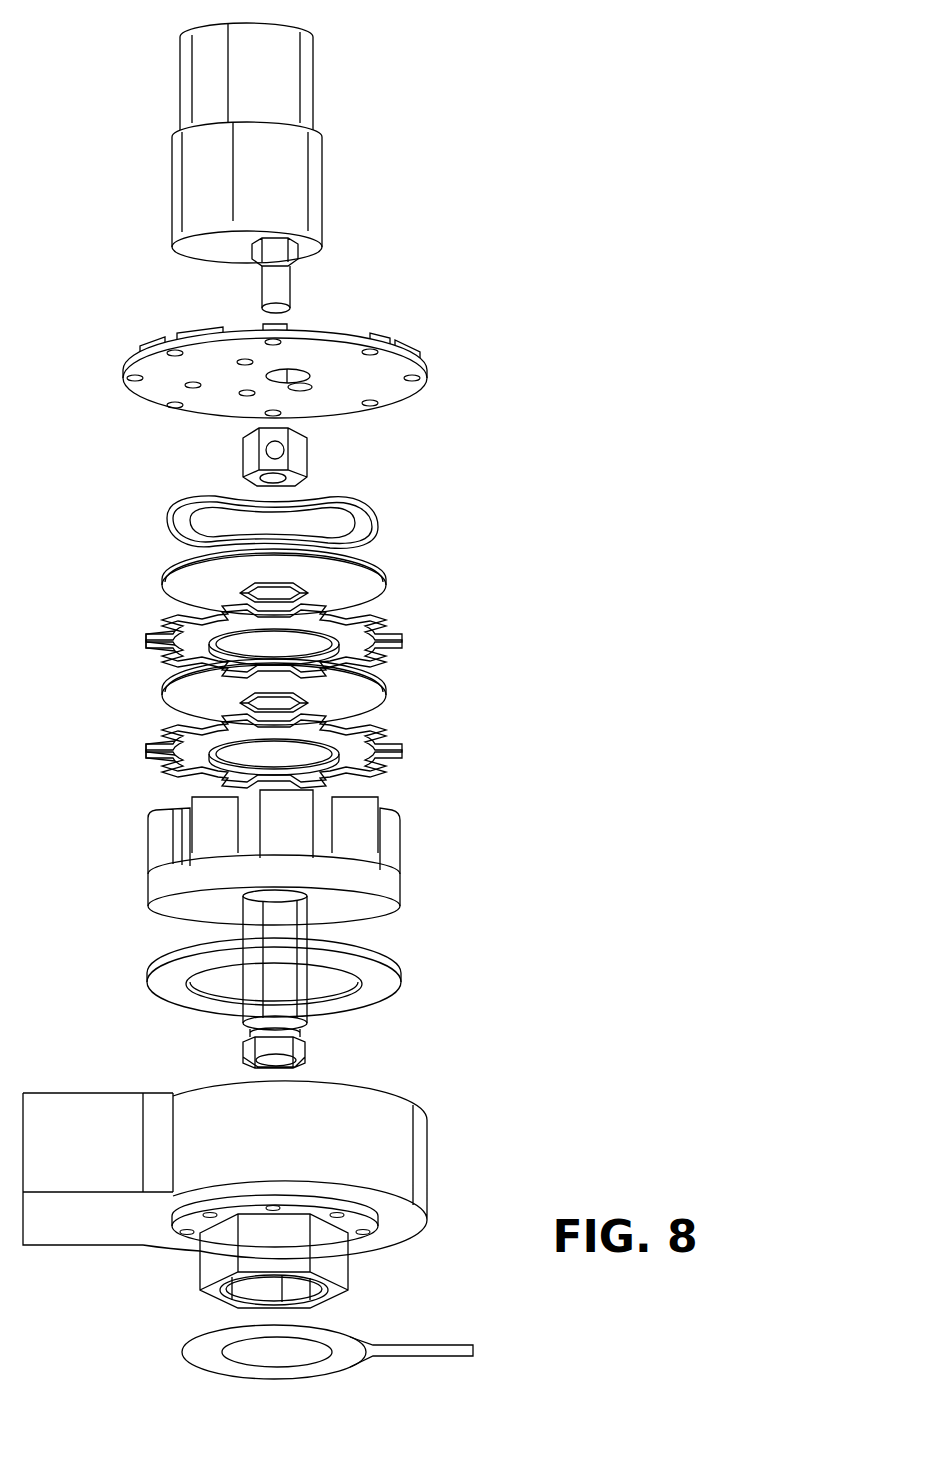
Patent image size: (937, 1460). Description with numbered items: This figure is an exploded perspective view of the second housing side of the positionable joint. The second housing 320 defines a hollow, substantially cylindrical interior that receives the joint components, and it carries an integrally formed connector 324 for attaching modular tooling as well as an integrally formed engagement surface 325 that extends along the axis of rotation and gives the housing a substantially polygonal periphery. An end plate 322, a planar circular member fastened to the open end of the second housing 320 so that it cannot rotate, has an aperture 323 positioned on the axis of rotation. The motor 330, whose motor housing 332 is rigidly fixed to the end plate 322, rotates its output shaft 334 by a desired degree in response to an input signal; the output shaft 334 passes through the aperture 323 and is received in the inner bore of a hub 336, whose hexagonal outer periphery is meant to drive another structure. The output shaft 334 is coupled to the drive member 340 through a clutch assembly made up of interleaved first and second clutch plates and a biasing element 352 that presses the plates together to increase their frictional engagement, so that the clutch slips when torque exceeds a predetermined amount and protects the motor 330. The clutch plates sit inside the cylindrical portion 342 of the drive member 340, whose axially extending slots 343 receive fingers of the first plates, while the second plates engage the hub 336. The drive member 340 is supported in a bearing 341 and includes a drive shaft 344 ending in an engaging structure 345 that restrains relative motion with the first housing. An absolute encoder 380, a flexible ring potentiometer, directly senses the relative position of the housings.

The second housing 320 is at (280, 1160).
The end plate 322 is at (330, 341).
The aperture 323 is at (287, 372).
The connector 324 is at (47, 1093).
The engagement surface 325 is at (340, 1262).
The motor 330 is at (252, 158).
The motor housing 332 is at (200, 182).
The output shaft 334 is at (272, 286).
The hub 336 is at (247, 460).
The drive member 340 is at (275, 929).
The bearing 341 is at (393, 965).
The cylindrical portion 342 is at (148, 858).
The axially extending slots 343 is at (177, 830).
The drive shaft 344 is at (252, 907).
The engaging structure 345 is at (300, 1048).
The biasing element 352 is at (375, 530).
The absolute encoder 380 is at (187, 1350).